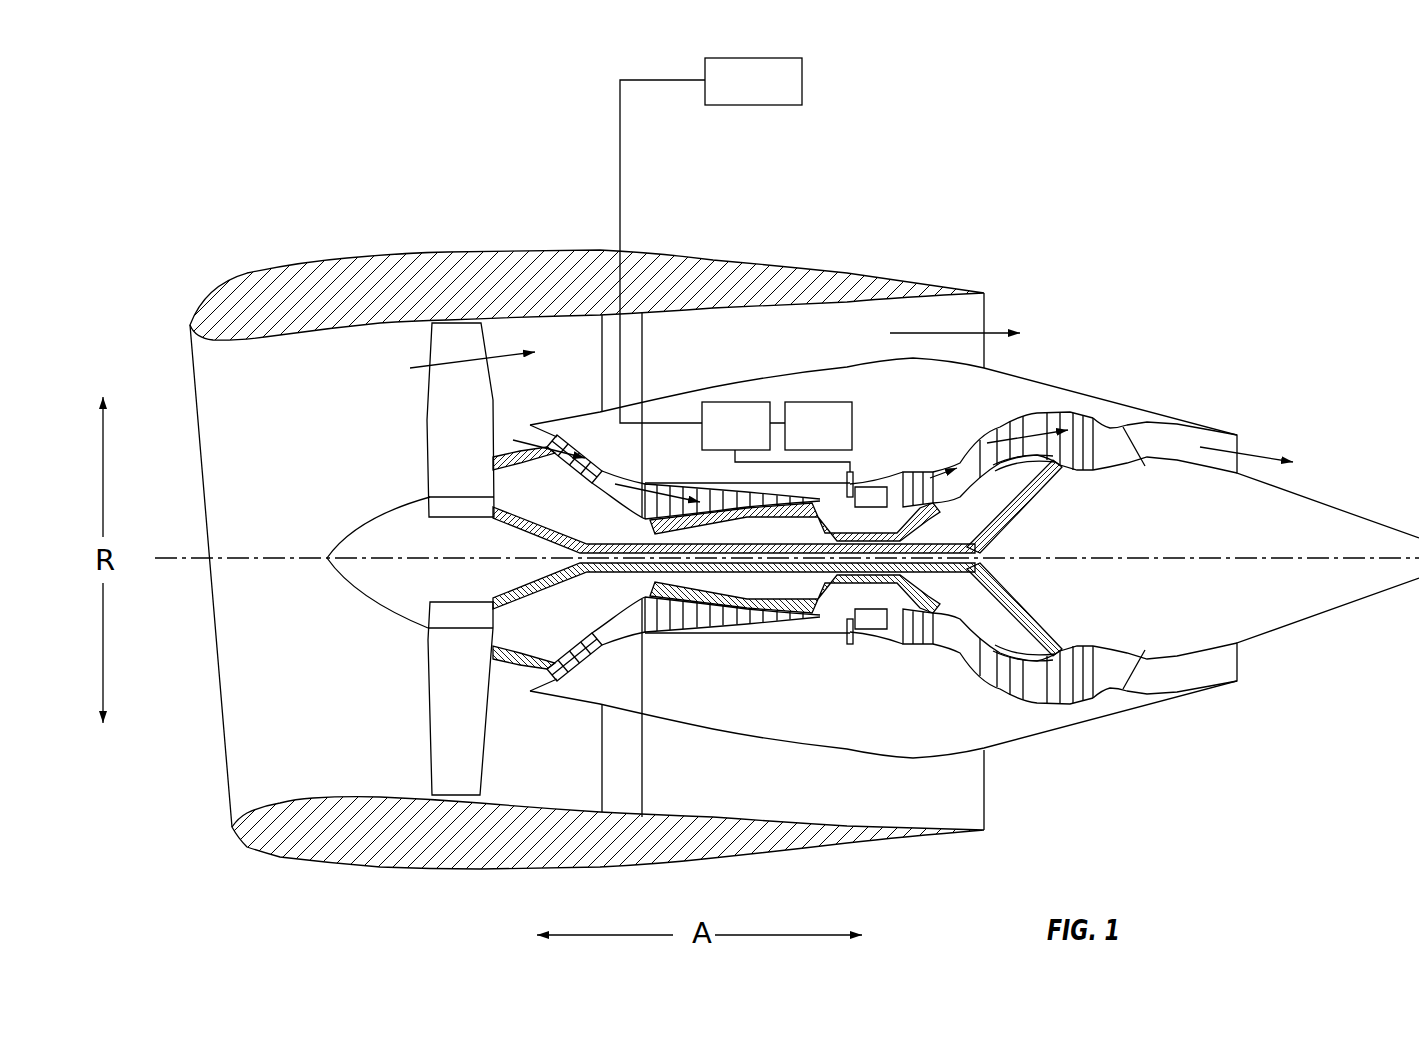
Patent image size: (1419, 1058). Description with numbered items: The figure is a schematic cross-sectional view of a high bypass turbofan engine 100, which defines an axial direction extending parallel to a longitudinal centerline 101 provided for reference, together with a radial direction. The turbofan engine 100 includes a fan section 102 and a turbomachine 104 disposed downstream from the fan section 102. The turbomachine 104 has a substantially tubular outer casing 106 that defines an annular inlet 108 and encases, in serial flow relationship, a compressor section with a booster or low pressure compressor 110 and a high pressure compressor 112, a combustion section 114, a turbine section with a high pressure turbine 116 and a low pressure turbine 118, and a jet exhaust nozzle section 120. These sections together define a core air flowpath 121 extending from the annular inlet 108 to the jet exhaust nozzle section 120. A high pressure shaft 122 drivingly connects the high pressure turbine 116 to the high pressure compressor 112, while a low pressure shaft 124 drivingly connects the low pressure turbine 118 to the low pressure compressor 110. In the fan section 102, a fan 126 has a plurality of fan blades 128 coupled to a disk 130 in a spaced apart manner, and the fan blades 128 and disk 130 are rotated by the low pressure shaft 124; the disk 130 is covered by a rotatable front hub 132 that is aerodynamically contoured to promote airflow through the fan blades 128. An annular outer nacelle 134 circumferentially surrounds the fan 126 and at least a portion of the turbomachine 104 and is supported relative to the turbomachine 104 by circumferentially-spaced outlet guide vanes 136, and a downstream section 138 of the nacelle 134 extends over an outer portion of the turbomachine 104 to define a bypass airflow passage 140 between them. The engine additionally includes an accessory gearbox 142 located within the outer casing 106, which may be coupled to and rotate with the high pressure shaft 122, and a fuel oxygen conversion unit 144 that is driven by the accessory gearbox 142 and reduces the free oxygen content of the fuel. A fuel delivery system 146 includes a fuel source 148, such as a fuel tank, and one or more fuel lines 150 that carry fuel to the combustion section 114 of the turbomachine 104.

The turbofan engine 100 is at (1145, 258).
The longitudinal centerline 101 is at (1205, 557).
The fan section 102 is at (380, 340).
The turbomachine 104 is at (766, 358).
The outer casing 106 is at (828, 750).
The annular inlet 108 is at (545, 677).
The low pressure compressor 110 is at (582, 700).
The high pressure compressor 112 is at (678, 625).
The combustion section 114 is at (868, 633).
The high pressure turbine 116 is at (987, 618).
The low pressure turbine 118 is at (1075, 711).
The jet exhaust nozzle section 120 is at (1142, 674).
The core air flowpath 121 is at (627, 642).
The high pressure shaft 122 is at (872, 532).
The low pressure shaft 124 is at (938, 546).
The fan 126 is at (370, 423).
The fan blades 128 is at (428, 730).
The disk 130 is at (447, 508).
The front hub 132 is at (325, 572).
The outer nacelle 134 is at (587, 554).
The outlet guide vanes 136 is at (643, 343).
The downstream section 138 is at (897, 272).
The bypass airflow passage 140 is at (862, 340).
The accessory gearbox 142 is at (835, 441).
The fuel oxygen conversion unit 144 is at (753, 441).
The fuel delivery system 146 is at (537, 118).
The fuel source 148 is at (770, 94).
The fuel lines 150 is at (620, 198).